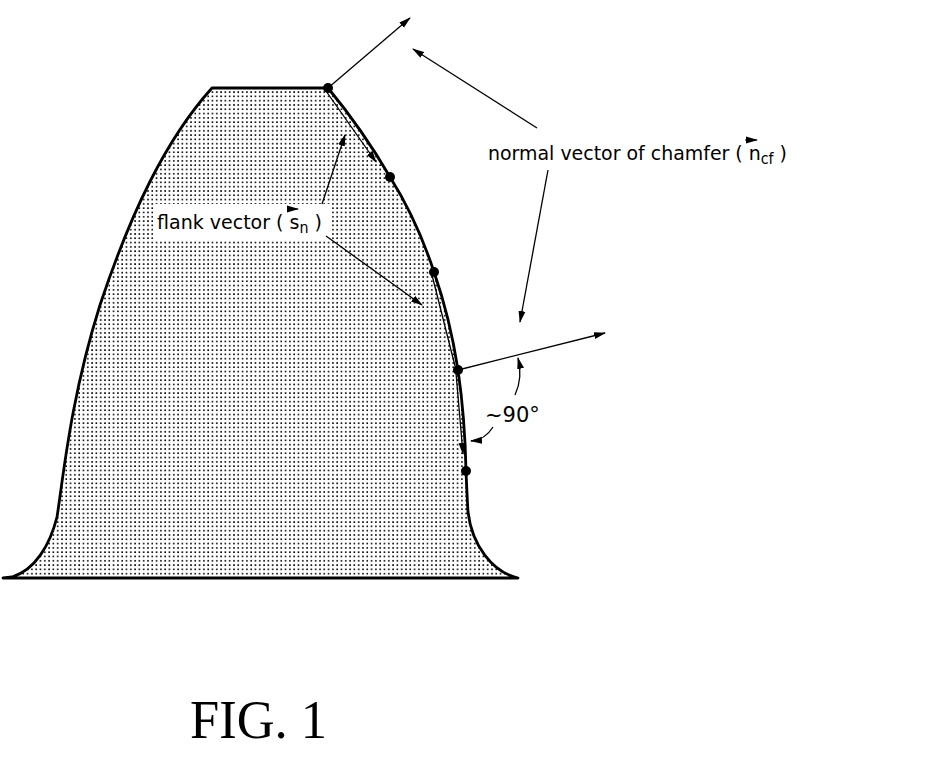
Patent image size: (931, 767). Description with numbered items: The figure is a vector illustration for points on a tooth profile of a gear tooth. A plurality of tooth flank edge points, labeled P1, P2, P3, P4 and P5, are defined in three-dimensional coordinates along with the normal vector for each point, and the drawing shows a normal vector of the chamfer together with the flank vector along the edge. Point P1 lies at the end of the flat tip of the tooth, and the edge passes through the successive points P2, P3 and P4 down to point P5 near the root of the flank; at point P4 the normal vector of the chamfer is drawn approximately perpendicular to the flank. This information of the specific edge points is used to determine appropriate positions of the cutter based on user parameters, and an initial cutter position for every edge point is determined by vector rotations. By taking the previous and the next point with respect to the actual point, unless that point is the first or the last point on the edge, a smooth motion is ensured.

The chamfer point P1 (tip edge) P1 is at (354, 94).
The chamfer point P2 is at (414, 172).
The chamfer point P3 is at (458, 269).
The chamfer point P4 is at (474, 353).
The chamfer point P5 (flank end) P5 is at (488, 472).